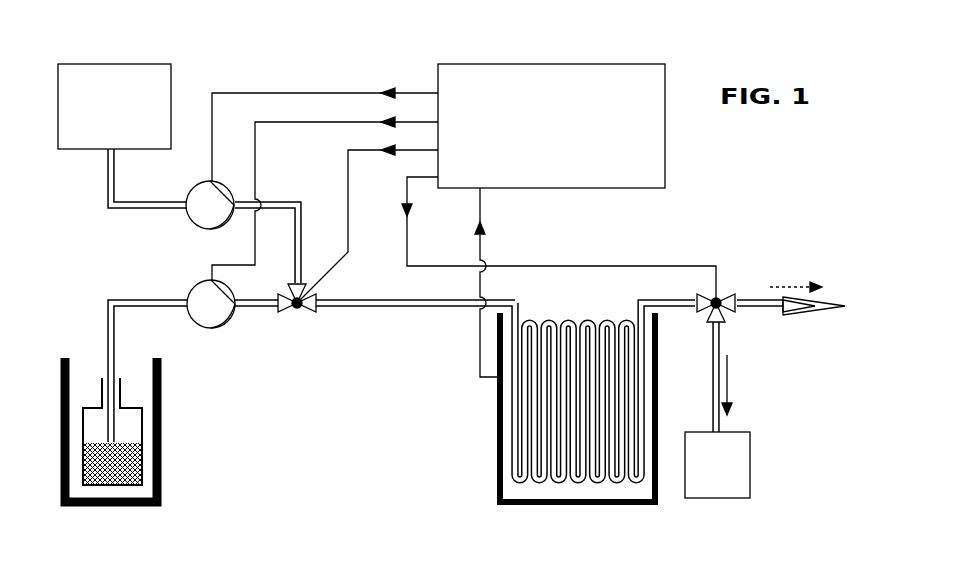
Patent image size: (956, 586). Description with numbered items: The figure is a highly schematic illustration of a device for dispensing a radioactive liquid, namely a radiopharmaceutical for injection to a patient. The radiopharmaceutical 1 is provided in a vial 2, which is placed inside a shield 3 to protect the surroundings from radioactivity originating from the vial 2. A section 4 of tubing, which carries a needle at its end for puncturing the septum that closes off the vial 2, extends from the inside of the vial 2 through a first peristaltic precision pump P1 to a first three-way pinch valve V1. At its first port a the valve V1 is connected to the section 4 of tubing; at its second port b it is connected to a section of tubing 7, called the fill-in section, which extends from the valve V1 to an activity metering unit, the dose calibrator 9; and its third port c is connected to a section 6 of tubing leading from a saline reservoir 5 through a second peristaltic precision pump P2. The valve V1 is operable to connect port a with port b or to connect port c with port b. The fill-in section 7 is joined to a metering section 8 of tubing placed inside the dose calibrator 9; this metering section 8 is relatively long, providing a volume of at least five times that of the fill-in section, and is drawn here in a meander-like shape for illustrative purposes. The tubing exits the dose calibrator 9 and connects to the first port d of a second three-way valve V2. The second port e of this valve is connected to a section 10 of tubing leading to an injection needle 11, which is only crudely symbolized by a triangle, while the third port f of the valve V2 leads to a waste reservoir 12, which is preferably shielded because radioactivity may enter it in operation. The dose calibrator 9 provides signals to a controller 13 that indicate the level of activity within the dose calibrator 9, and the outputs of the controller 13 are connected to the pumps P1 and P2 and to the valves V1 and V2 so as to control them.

The radiopharmaceutical 1 is at (142, 452).
The vial 2 is at (142, 425).
The shield 3 is at (160, 388).
The section of tubing 4 is at (108, 330).
The saline reservoir 5 is at (108, 120).
The section of tubing 6 is at (110, 175).
The fill-in section 7 is at (383, 300).
The metering section 8 is at (512, 445).
The dose calibrator 9 is at (498, 473).
The section of tubing 10 is at (783, 308).
The injection needle 11 is at (815, 308).
The waste reservoir 12 is at (705, 480).
The controller 13 is at (543, 137).
The first peristaltic precision pump P1 is at (203, 301).
The second peristaltic precision pump P2 is at (200, 212).
The first three-way pinch valve V1 is at (290, 310).
The second three-way valve V2 is at (718, 300).
The first port a is at (251, 291).
The second port b is at (333, 291).
The third port c is at (281, 271).
The first port d is at (678, 292).
The second port e is at (750, 291).
The third port f is at (700, 338).